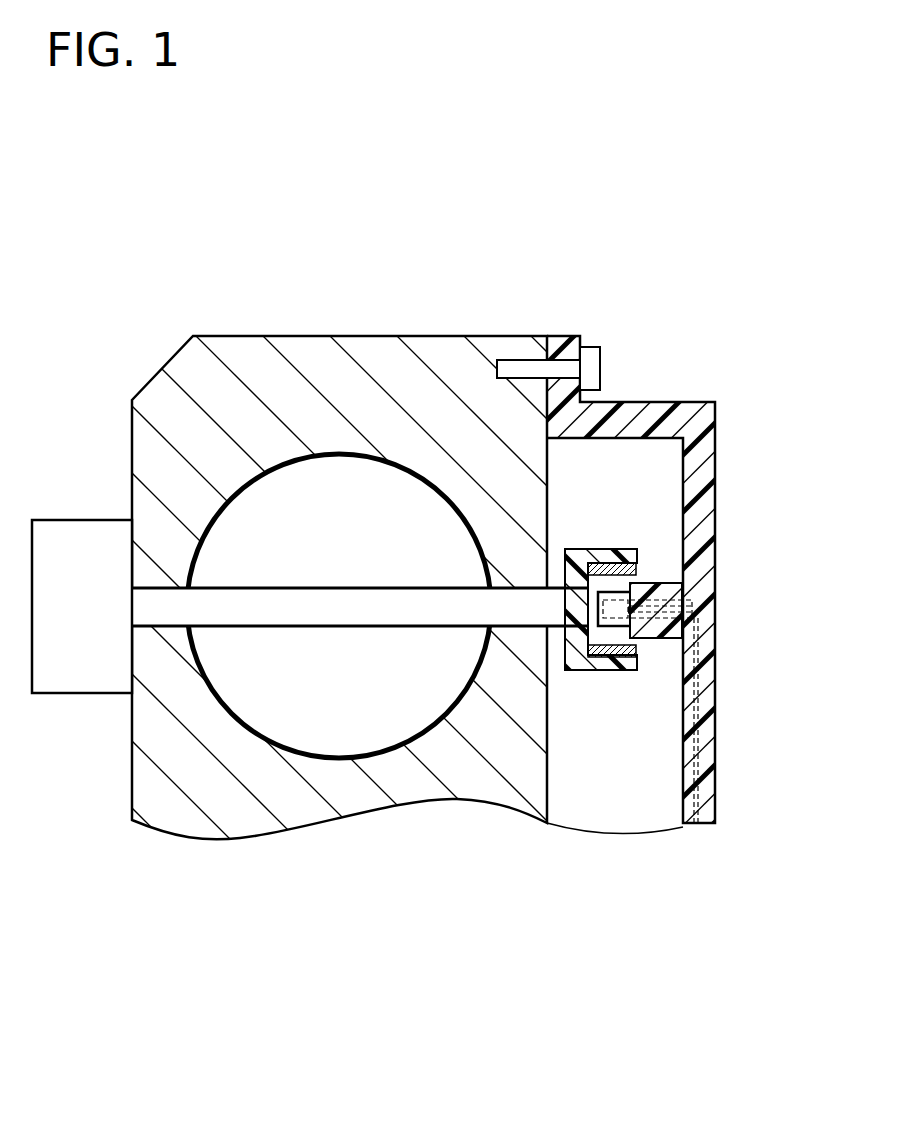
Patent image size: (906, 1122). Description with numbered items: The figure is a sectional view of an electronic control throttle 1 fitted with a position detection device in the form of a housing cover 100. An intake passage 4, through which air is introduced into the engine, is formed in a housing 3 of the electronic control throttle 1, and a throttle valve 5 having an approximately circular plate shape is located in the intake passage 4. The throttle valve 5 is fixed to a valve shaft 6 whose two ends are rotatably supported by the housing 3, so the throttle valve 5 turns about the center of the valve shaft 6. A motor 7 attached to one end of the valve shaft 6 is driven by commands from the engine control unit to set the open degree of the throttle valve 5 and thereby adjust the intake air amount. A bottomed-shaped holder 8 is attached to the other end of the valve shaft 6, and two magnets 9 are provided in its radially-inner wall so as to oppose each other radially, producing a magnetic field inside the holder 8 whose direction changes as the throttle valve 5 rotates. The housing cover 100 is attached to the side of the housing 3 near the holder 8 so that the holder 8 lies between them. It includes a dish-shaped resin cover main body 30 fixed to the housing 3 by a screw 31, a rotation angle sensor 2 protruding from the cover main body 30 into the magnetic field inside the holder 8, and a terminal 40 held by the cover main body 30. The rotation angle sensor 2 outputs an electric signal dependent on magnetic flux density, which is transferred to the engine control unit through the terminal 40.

The electronic control throttle 1 is at (691, 237).
The rotation angle sensor 2 is at (617, 592).
The housing 3 is at (223, 430).
The intake passage 4 is at (435, 728).
The throttle valve 5 is at (340, 530).
The valve shaft 6 is at (268, 603).
The motor 7 is at (80, 520).
The holder 8 is at (578, 667).
The magnets 9 is at (603, 563).
The cover main body 30 is at (704, 470).
The screw 31 is at (608, 358).
The terminal 40 is at (697, 727).
The housing cover 100 is at (704, 563).